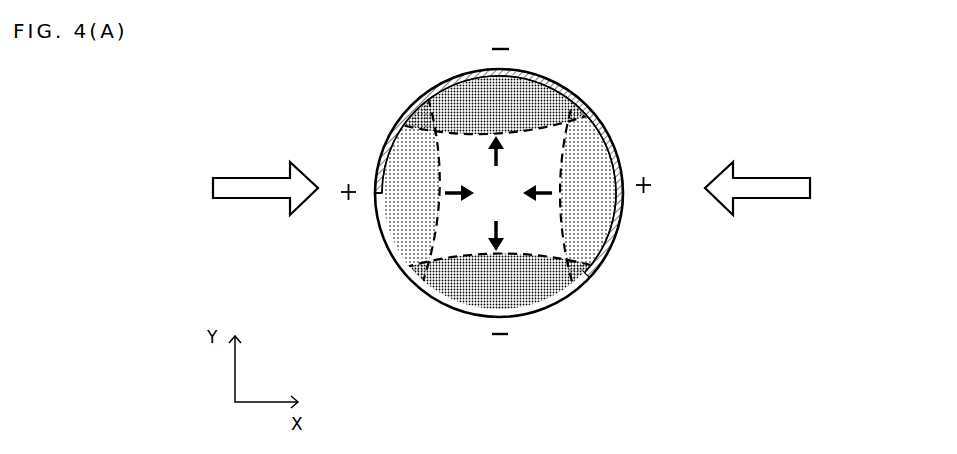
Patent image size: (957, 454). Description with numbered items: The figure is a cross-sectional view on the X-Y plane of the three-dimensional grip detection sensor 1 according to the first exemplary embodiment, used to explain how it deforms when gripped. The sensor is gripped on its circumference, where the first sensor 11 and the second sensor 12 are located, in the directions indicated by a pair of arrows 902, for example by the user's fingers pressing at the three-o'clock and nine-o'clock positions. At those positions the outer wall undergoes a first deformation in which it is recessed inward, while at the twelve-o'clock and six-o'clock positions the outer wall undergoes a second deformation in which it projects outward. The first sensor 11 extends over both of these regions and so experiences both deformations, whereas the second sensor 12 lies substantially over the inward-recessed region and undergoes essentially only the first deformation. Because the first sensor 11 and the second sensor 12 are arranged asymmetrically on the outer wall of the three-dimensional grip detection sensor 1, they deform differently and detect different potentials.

The three-dimensional grip detection sensor 1 is at (655, 64).
The first sensor 11 is at (388, 140).
The second sensor 12 is at (622, 202).
The arrows 902 is at (250, 198).